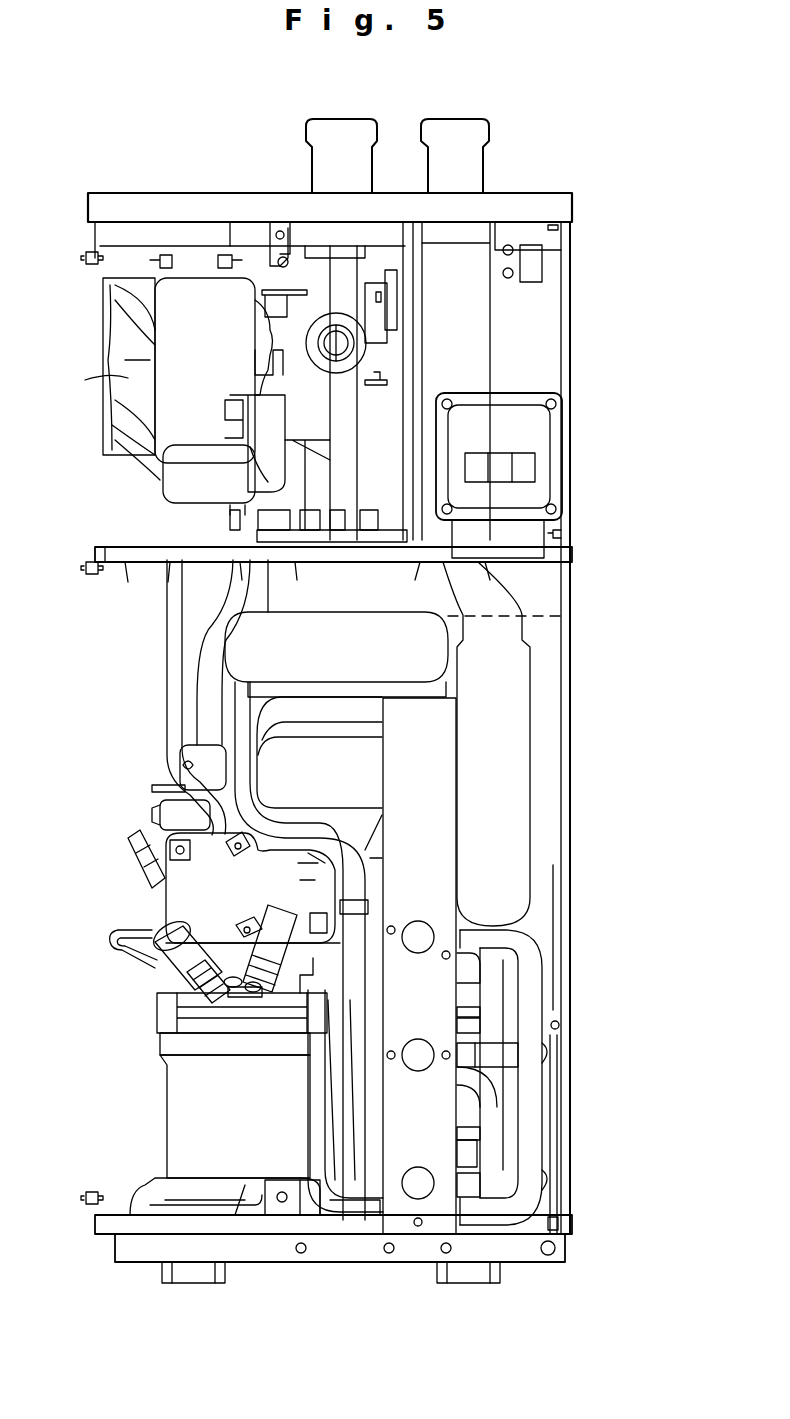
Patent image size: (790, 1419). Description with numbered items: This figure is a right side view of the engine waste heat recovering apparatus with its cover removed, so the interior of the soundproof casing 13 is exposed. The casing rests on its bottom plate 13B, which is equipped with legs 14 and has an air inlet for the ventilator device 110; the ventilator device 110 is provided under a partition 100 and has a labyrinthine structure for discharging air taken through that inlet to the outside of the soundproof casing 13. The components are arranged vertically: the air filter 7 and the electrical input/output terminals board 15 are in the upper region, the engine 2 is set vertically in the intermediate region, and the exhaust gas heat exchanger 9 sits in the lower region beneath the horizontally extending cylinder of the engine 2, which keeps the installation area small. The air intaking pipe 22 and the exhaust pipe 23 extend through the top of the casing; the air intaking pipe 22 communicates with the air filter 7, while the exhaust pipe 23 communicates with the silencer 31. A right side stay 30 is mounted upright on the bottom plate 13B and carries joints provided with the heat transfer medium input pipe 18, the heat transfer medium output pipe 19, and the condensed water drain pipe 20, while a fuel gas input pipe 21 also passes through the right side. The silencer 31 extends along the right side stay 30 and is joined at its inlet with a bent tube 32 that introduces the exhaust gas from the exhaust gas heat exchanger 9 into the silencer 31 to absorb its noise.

The engine 2 is at (176, 895).
The air filter 7 is at (125, 376).
The exhaust gas heat exchanger 9 is at (185, 1112).
The soundproof casing 13 is at (572, 606).
The bottom plate 13B is at (525, 1250).
The legs 14 is at (200, 1270).
The electrical input/output terminals board 15 is at (535, 462).
The heat transfer medium input pipe 18 is at (418, 1168).
The heat transfer medium output pipe 19 is at (418, 1040).
The condensed water drain pipe 20 is at (420, 930).
The fuel gas input pipe 21 is at (345, 340).
The air intaking pipe 22 is at (325, 148).
The exhaust pipe 23 is at (466, 145).
The right side stay 30 is at (432, 812).
The silencer 31 is at (512, 731).
The bent tube 32 is at (238, 690).
The partition 100 is at (117, 563).
The ventilator device 110 is at (530, 596).